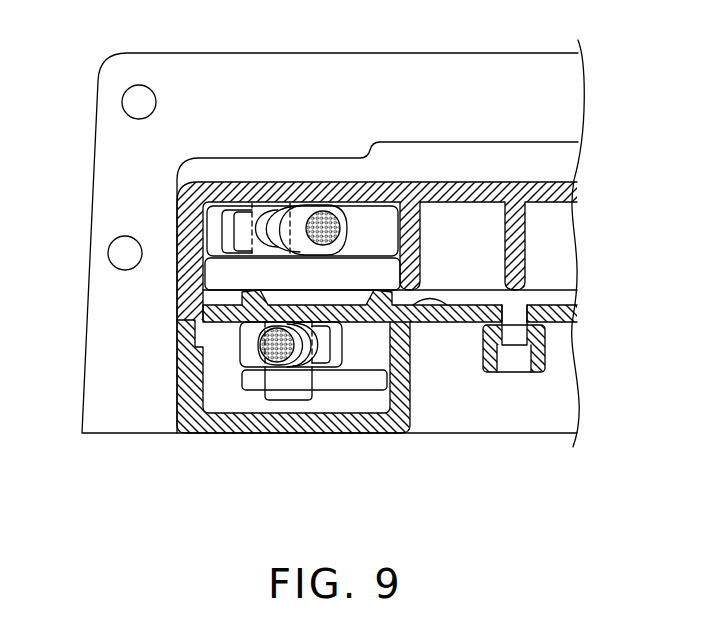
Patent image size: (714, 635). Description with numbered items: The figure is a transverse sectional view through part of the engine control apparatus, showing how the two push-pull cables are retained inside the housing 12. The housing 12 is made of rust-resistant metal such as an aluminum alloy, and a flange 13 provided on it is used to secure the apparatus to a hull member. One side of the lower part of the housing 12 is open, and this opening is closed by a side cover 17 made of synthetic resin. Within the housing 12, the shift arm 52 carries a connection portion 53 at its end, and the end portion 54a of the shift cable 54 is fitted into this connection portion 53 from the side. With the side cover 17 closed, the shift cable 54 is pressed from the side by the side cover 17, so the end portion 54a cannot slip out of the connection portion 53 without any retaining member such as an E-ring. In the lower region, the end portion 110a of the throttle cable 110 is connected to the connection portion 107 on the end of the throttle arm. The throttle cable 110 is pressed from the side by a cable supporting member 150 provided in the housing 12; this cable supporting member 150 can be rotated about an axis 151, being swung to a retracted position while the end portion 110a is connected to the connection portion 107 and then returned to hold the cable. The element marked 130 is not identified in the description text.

The flange 13 is at (97, 160).
The connection portion 53 is at (253, 192).
The end portion 54a is at (271, 210).
The shift cable 54 is at (298, 208).
The shift arm 52 is at (360, 272).
The side cover 17 is at (453, 190).
The throttle cable 110 is at (260, 348).
The axis 151 is at (547, 357).
The cable supporting member 150 is at (443, 302).
The lower seal body 130 is at (253, 376).
The connection portion 107 is at (282, 383).
The end portion 110a is at (303, 333).
The housing 12 is at (370, 428).